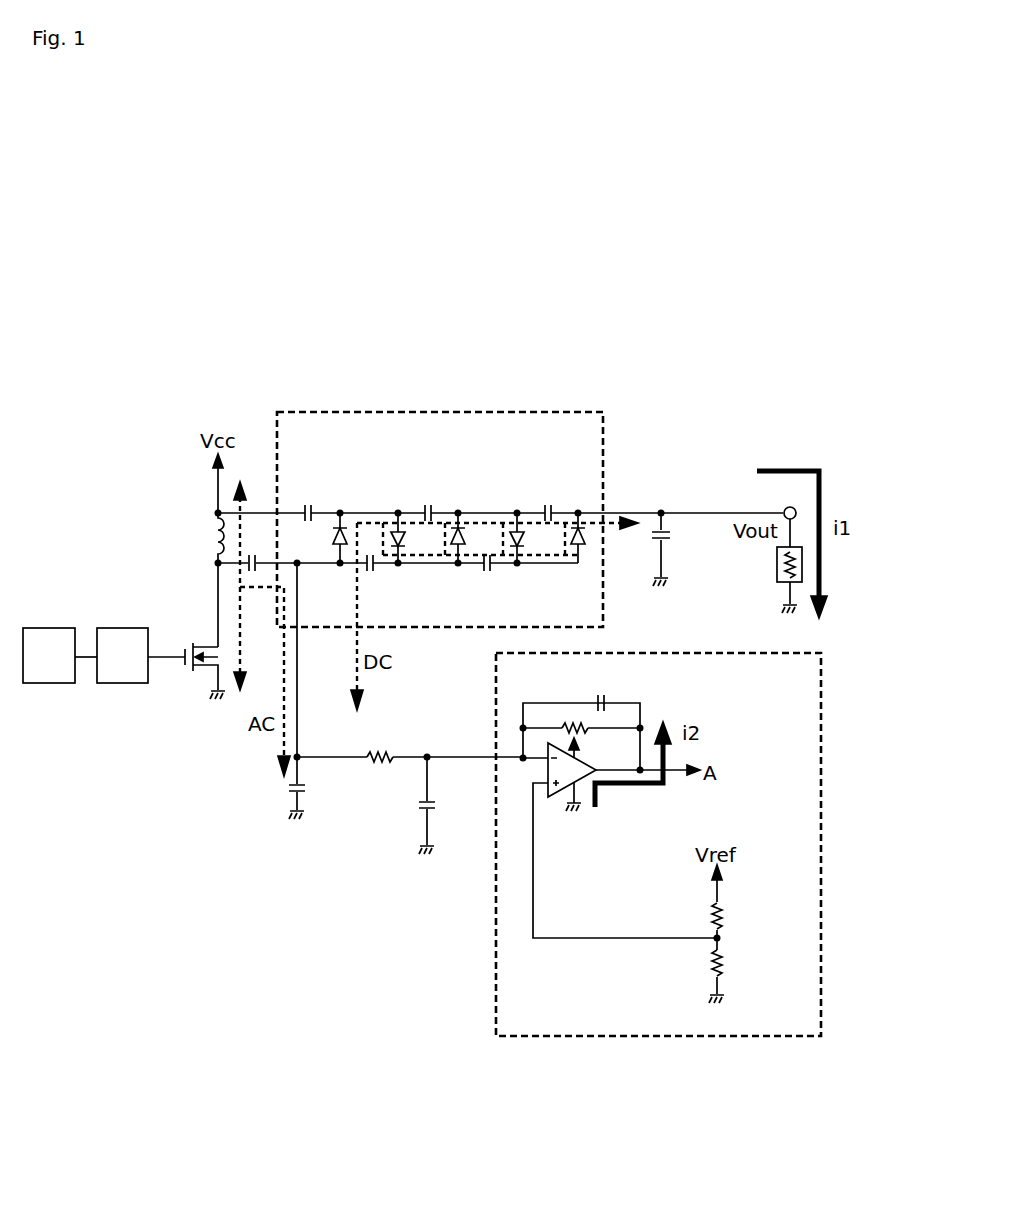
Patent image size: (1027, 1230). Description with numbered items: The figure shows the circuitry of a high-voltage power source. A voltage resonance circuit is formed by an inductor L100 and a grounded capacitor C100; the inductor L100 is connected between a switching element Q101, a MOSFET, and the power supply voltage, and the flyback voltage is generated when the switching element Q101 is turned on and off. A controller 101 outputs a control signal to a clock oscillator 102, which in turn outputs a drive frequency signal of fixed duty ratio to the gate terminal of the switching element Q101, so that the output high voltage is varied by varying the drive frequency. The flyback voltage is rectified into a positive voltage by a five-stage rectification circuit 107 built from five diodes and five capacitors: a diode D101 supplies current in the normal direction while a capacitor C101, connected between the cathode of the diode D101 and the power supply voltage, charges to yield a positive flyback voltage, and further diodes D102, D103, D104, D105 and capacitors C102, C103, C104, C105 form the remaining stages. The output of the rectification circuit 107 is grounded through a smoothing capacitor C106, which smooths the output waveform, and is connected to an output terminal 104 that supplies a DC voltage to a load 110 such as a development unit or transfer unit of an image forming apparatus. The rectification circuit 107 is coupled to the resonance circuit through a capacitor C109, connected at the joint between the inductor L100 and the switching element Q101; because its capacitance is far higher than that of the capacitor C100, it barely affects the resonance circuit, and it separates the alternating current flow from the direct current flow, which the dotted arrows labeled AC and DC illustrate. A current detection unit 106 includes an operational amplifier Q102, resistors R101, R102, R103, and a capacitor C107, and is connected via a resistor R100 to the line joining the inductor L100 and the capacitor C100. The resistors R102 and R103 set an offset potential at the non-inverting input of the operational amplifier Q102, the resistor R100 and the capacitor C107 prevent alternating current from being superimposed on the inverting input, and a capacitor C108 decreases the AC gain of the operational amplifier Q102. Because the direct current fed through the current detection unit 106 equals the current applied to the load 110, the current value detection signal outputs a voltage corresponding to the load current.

The controller 101 is at (50, 628).
The clock oscillator 102 is at (119, 628).
The output terminal 104 is at (792, 501).
The current detection unit 106 is at (665, 652).
The rectification circuit 107 is at (436, 410).
The load 110 is at (777, 562).
The inductor L100 is at (214, 546).
The switching element Q101 is at (200, 672).
The operational amplifier Q102 is at (554, 798).
The capacitor C100 is at (290, 790).
The capacitor C101 is at (310, 504).
The capacitor C102 is at (368, 576).
The capacitor C103 is at (428, 504).
The capacitor C104 is at (489, 576).
The capacitor C105 is at (551, 501).
The smoothing capacitor C106 is at (657, 523).
The capacitor C107 is at (420, 808).
The capacitor C108 is at (604, 695).
The capacitor C109 is at (251, 572).
The diode D101 is at (340, 542).
The diode D102 is at (392, 528).
The diode D103 is at (458, 542).
The diode D104 is at (514, 528).
The diode D105 is at (580, 544).
The resistor R100 is at (381, 752).
The resistor R101 is at (570, 725).
The resistor R102 is at (722, 913).
The resistor R103 is at (722, 963).